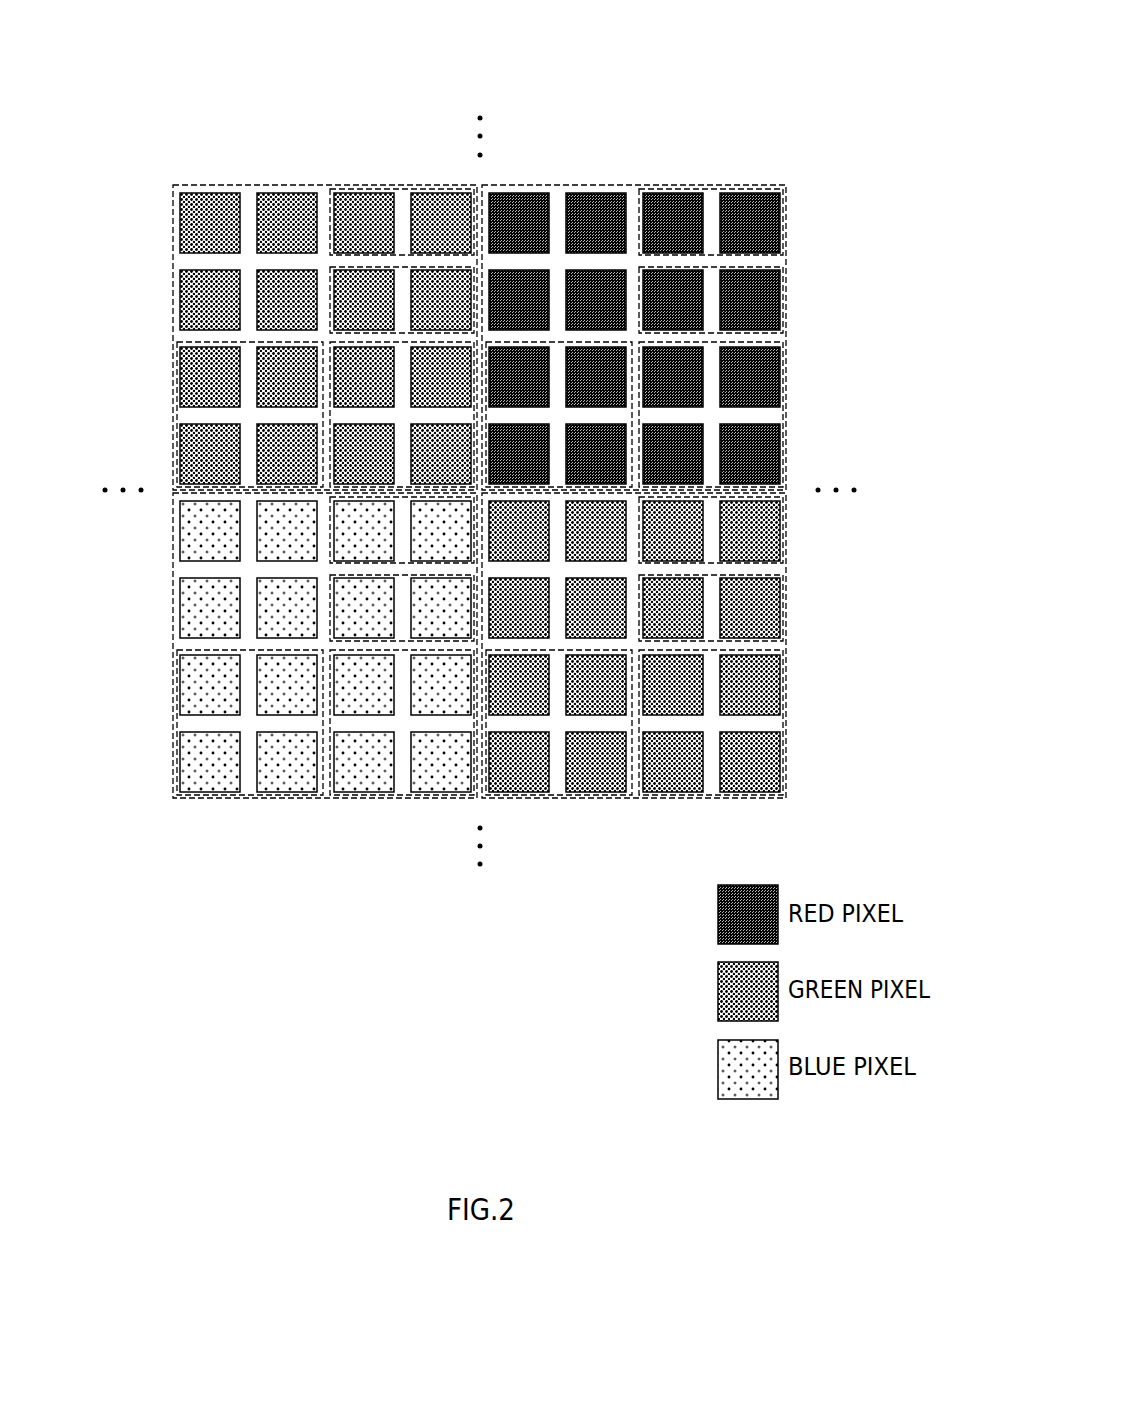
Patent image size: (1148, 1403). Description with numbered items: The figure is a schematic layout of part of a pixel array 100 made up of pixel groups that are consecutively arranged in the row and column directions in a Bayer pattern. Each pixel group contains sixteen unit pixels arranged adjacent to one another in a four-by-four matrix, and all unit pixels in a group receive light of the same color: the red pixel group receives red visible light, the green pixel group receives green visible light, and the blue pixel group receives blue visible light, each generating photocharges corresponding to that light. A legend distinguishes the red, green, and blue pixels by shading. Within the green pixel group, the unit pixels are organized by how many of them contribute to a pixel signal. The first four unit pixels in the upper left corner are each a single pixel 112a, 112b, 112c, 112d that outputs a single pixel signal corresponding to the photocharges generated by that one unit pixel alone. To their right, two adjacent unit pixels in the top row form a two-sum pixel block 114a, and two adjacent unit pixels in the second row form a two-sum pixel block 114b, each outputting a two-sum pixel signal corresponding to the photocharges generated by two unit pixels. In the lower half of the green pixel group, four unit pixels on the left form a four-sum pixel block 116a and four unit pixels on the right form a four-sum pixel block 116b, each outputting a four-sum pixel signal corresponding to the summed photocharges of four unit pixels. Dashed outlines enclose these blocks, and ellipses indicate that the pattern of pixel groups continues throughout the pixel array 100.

The pixel array 100 is at (499, 40).
The single pixel 112a is at (208, 192).
The single pixel 112b is at (285, 192).
The single pixel 112c is at (178, 277).
The single pixel 112d is at (258, 317).
The 2-SUM pixel block 114a is at (361, 188).
The 2-SUM pixel block 114b is at (402, 266).
The 4-SUM pixel block 116a is at (177, 372).
The 4-SUM pixel block 116b is at (330, 413).